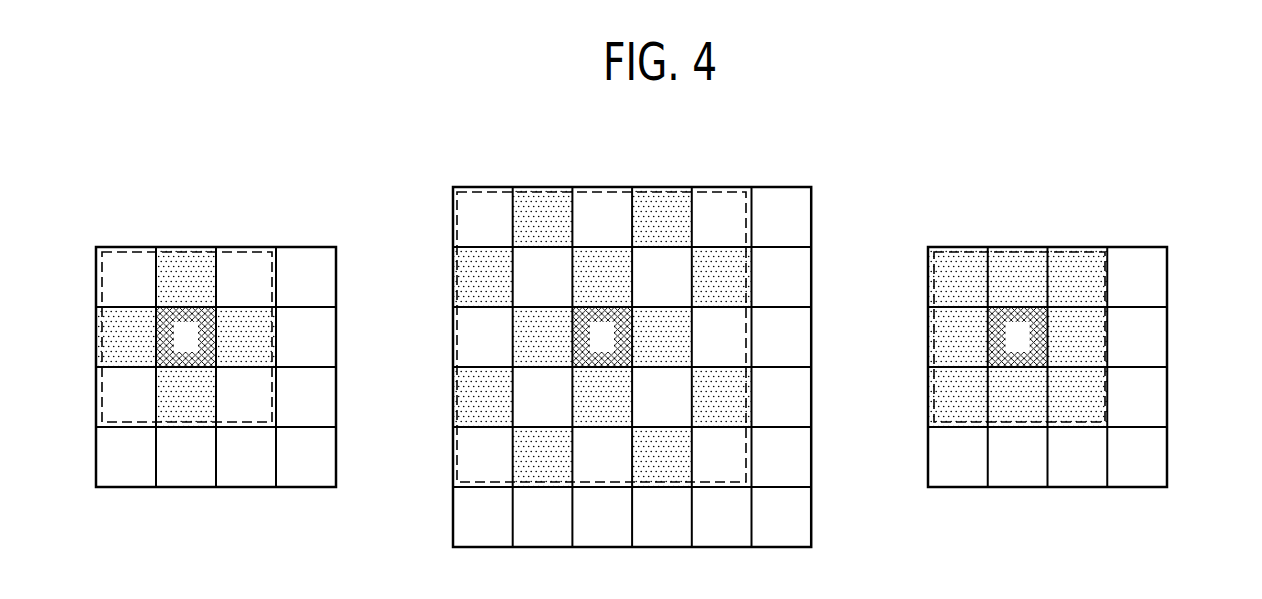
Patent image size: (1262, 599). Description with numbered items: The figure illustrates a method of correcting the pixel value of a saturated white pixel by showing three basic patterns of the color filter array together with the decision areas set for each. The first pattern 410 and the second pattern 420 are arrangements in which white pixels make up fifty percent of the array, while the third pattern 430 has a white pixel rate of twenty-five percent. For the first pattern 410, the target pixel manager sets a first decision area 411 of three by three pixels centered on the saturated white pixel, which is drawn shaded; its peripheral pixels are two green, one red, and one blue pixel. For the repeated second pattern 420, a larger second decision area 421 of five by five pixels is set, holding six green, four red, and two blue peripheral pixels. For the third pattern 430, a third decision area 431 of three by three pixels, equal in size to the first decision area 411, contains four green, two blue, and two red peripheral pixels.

The first pattern 410 is at (336, 253).
The first decision area 411 is at (190, 247).
The second pattern 420 is at (811, 198).
The second decision area 421 is at (604, 187).
The third pattern 430 is at (1167, 258).
The third decision area 431 is at (1024, 247).